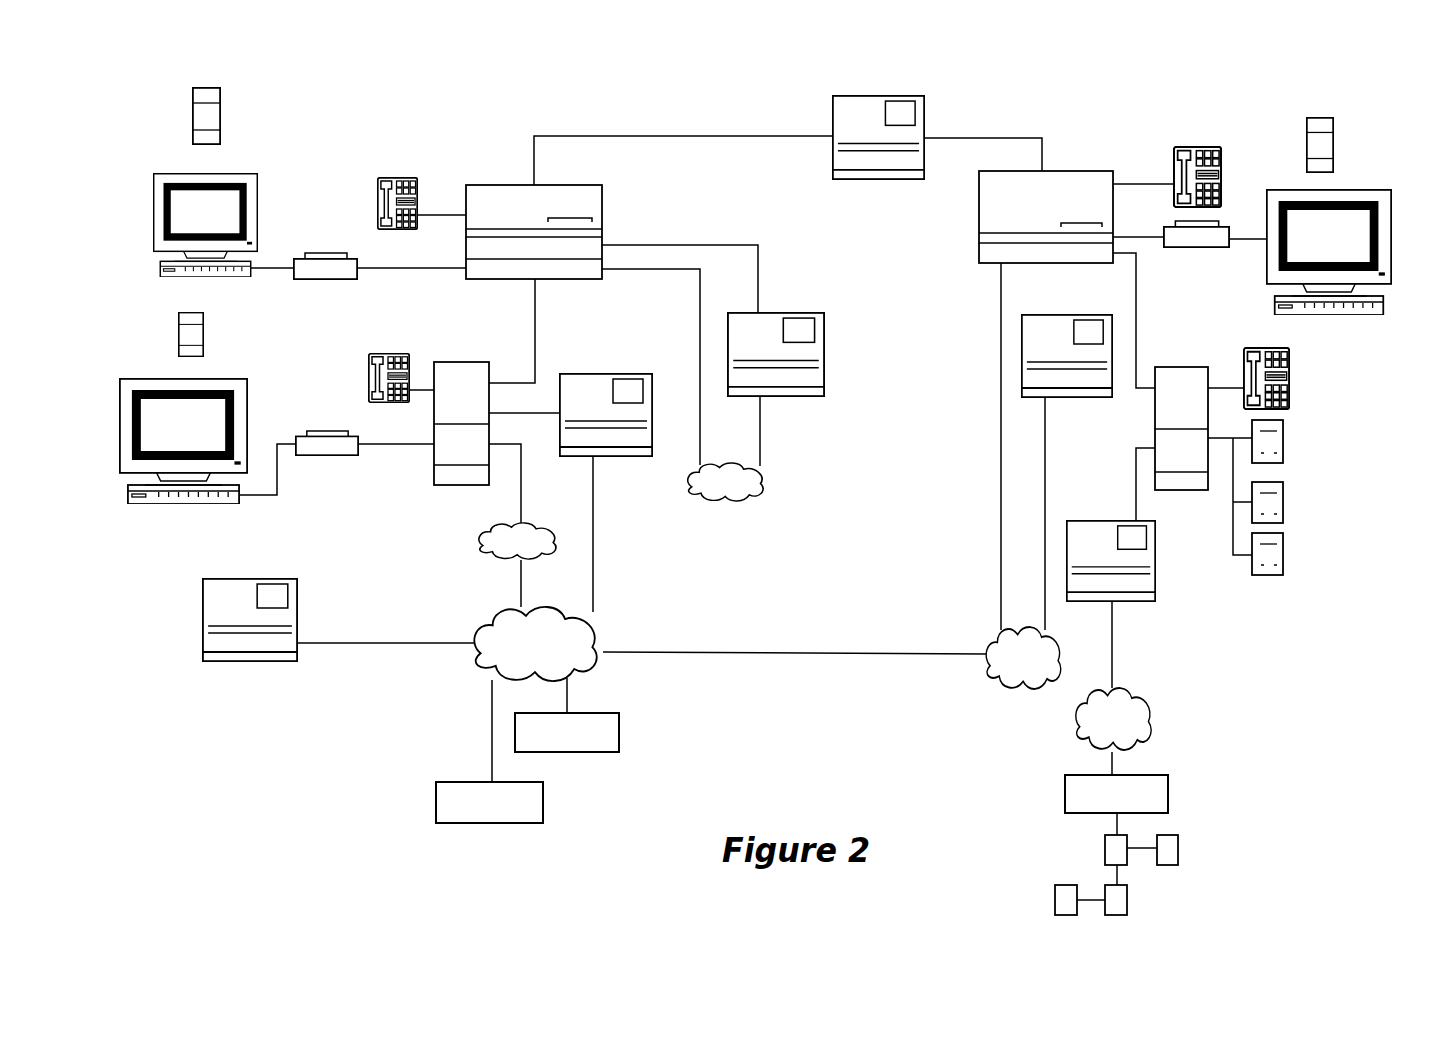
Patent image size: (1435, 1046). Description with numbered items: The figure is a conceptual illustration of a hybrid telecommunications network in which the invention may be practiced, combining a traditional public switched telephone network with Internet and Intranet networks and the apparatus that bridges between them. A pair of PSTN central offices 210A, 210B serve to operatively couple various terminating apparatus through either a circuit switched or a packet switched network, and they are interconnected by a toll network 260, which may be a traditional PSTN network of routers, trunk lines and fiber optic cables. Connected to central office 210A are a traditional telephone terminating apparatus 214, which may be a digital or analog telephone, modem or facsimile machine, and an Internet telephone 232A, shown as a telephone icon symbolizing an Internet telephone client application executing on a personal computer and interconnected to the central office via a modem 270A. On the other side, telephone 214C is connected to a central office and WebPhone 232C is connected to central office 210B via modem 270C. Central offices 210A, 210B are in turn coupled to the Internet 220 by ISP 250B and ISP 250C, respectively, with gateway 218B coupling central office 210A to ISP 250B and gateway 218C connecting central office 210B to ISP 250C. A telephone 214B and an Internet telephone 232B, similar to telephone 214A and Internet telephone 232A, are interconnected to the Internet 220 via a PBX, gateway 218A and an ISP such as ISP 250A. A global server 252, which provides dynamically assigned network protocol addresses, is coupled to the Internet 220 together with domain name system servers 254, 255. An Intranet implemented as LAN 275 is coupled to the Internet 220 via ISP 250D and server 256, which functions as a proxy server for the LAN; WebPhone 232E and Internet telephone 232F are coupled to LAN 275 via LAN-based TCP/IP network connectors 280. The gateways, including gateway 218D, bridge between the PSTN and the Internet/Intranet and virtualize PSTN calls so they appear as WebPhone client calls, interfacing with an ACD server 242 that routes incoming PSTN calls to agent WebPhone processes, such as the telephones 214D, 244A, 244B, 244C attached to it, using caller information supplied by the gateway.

The central office 210A is at (575, 185).
The central office 210B is at (1067, 170).
The terminating apparatus 214 is at (452, 362).
The telephone 214A is at (387, 178).
The telephone 214B is at (385, 353).
The telephone 214C is at (1188, 145).
The telephone 214D is at (1290, 373).
The gateway 218A is at (585, 373).
The gateway 218B is at (788, 312).
The gateway 218C is at (1040, 314).
The gateway 218D is at (1112, 520).
The Internet 220 is at (477, 660).
The Internet telephone 232A is at (244, 172).
The Internet telephone 232B is at (229, 378).
The WebPhone 232C is at (1357, 189).
The WebPhone 232E is at (1053, 902).
The Internet telephone 232F is at (1180, 845).
The ACD server 242 is at (1170, 367).
The telephone extension 244A is at (1284, 437).
The telephone extension 244B is at (1284, 500).
The telephone extension 244C is at (1284, 551).
The Internet service provider 250A is at (478, 542).
The Internet service provider 250B is at (768, 478).
The Internet service provider 250C is at (995, 638).
The Internet service provider 250D is at (1155, 717).
The global server 252 is at (228, 578).
The domain name system server 254 is at (622, 732).
The domain name system server 255 is at (545, 808).
The server 256 is at (1170, 792).
The toll network 260 is at (855, 95).
The modem 270A is at (312, 280).
The modem 270C is at (1185, 252).
The LAN 275 is at (1113, 824).
The LAN connector 280 is at (1128, 902).